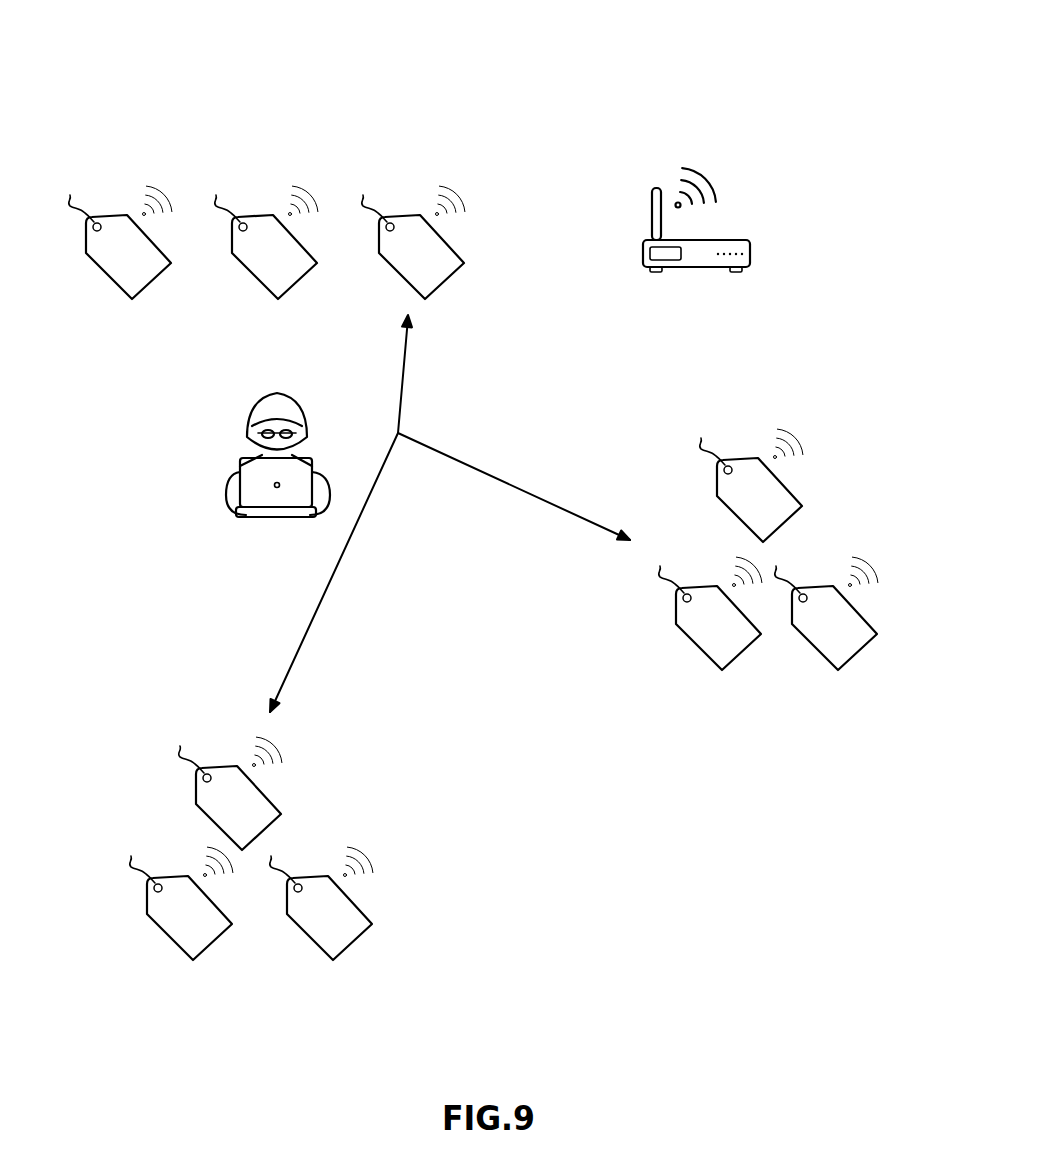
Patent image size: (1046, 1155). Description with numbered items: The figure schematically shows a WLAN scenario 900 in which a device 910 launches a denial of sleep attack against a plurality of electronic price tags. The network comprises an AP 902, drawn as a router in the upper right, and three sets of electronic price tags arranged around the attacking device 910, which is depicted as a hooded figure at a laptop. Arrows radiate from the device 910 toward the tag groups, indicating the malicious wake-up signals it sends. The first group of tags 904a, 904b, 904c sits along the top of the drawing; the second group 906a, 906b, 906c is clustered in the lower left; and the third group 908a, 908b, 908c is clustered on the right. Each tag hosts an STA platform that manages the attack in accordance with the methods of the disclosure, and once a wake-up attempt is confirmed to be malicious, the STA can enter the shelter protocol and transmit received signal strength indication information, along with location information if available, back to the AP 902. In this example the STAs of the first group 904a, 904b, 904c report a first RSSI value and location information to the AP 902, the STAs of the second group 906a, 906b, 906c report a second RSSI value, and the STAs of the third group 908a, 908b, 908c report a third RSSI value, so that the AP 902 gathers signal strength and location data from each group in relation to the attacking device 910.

The system environment 900 is at (527, 68).
The AP 902 is at (698, 163).
The electronic price tag of first group 904a is at (118, 177).
The electronic price tag of first group 904b is at (307, 177).
The electronic price tag of first group 904c is at (453, 177).
The electronic price tag of second group 906a is at (230, 730).
The electronic price tag of second group 906b is at (112, 910).
The electronic price tag of second group 906c is at (390, 910).
The electronic price tag of third group 908a is at (637, 618).
The electronic price tag of third group 908b is at (897, 618).
The electronic price tag of third group 908c is at (792, 420).
The device 910 is at (220, 438).